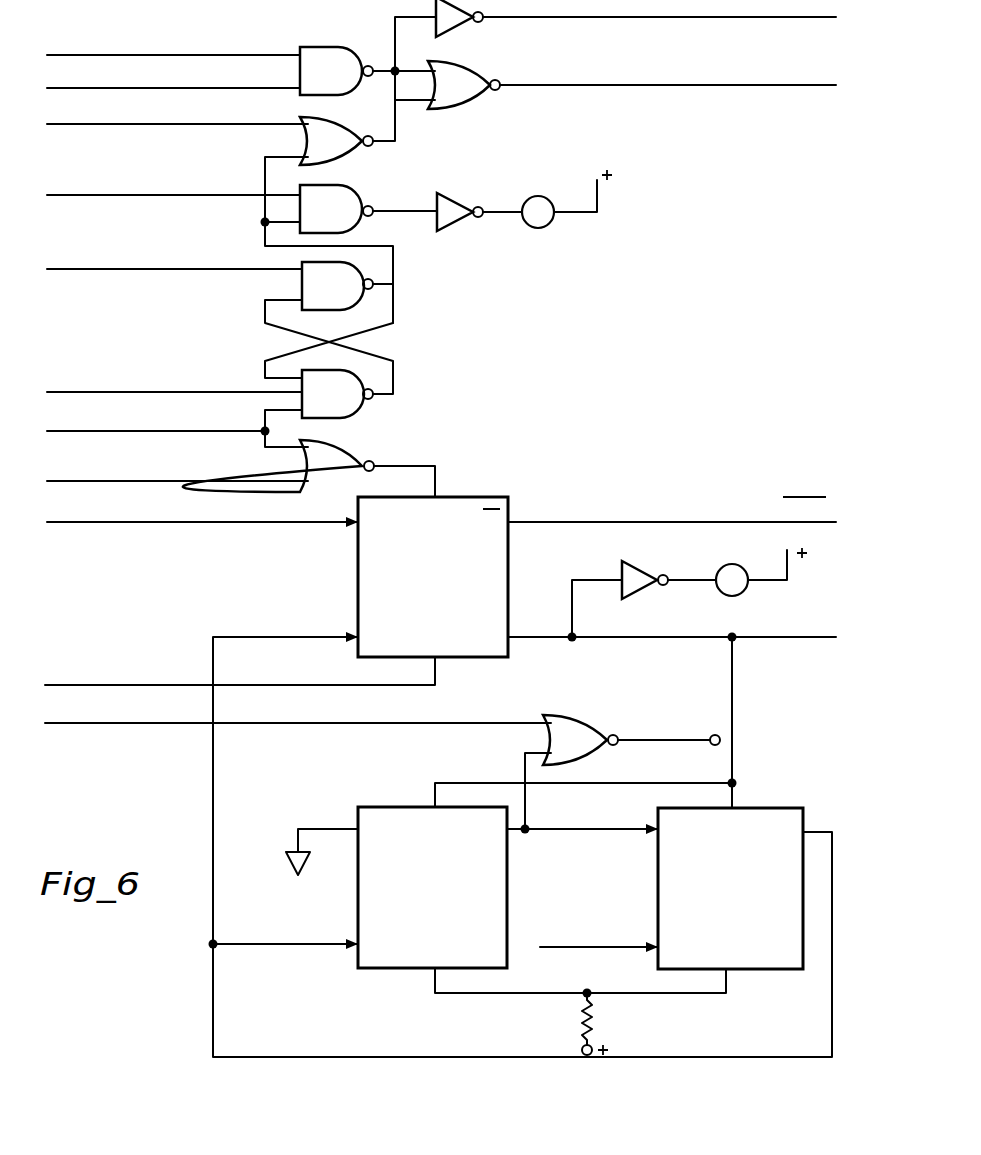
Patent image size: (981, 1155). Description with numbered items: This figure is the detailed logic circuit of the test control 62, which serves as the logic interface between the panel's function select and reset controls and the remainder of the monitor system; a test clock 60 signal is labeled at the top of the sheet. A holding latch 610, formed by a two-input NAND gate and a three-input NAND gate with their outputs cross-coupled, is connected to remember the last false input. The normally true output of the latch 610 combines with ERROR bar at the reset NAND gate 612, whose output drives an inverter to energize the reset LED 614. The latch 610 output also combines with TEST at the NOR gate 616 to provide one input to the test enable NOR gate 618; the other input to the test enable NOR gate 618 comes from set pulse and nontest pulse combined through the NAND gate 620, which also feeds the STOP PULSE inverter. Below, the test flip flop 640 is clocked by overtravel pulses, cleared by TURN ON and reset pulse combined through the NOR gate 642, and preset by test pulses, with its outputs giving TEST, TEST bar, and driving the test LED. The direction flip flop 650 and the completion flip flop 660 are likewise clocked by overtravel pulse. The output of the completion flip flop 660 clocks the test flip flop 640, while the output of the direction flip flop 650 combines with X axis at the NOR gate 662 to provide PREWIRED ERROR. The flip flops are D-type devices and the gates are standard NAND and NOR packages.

The test clock 60 is at (143, 8).
The test control 62 is at (422, 528).
The holding latch 610 is at (372, 347).
The reset NAND gate 612 is at (337, 225).
The reset LED 614 is at (542, 228).
The NOR gate 616 is at (337, 155).
The test enable NOR gate 618 is at (465, 99).
The NAND gate 620 is at (337, 86).
The test flip flop 640 is at (443, 614).
The NOR gate 642 is at (337, 481).
The direction flip flop 650 is at (440, 933).
The completion flip flop 660 is at (733, 934).
The NOR gate 662 is at (580, 751).